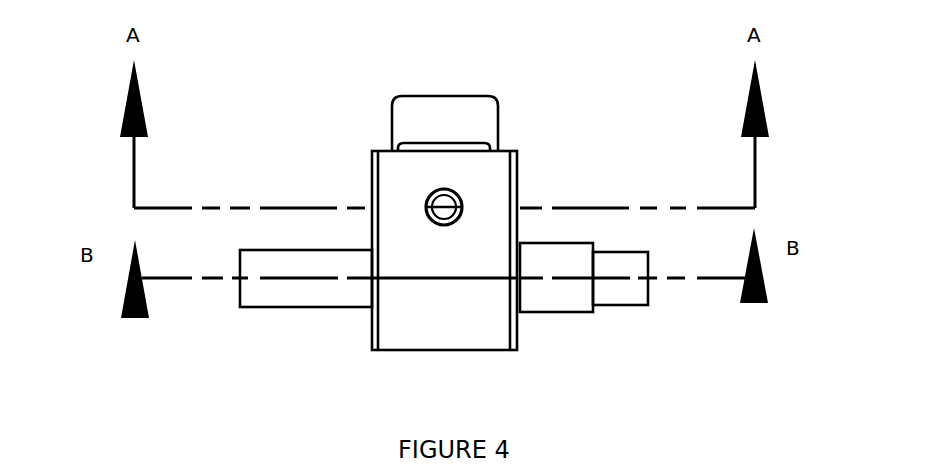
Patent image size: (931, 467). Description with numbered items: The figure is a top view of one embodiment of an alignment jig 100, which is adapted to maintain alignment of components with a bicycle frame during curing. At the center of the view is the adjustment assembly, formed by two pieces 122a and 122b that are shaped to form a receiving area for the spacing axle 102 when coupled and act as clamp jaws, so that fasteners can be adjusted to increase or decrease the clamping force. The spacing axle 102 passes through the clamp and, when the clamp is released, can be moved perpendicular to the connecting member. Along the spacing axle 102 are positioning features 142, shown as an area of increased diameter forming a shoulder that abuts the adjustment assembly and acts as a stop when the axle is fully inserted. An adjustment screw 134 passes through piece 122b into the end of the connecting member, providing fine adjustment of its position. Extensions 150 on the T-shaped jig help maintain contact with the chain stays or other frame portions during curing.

The alignment jig 100 is at (312, 110).
The spacing axle 102 is at (318, 297).
The piece 122a is at (456, 330).
The piece 122b is at (518, 172).
The adjustment screw 134 is at (428, 193).
The positioning features 142 is at (594, 309).
The extensions 150 is at (441, 120).